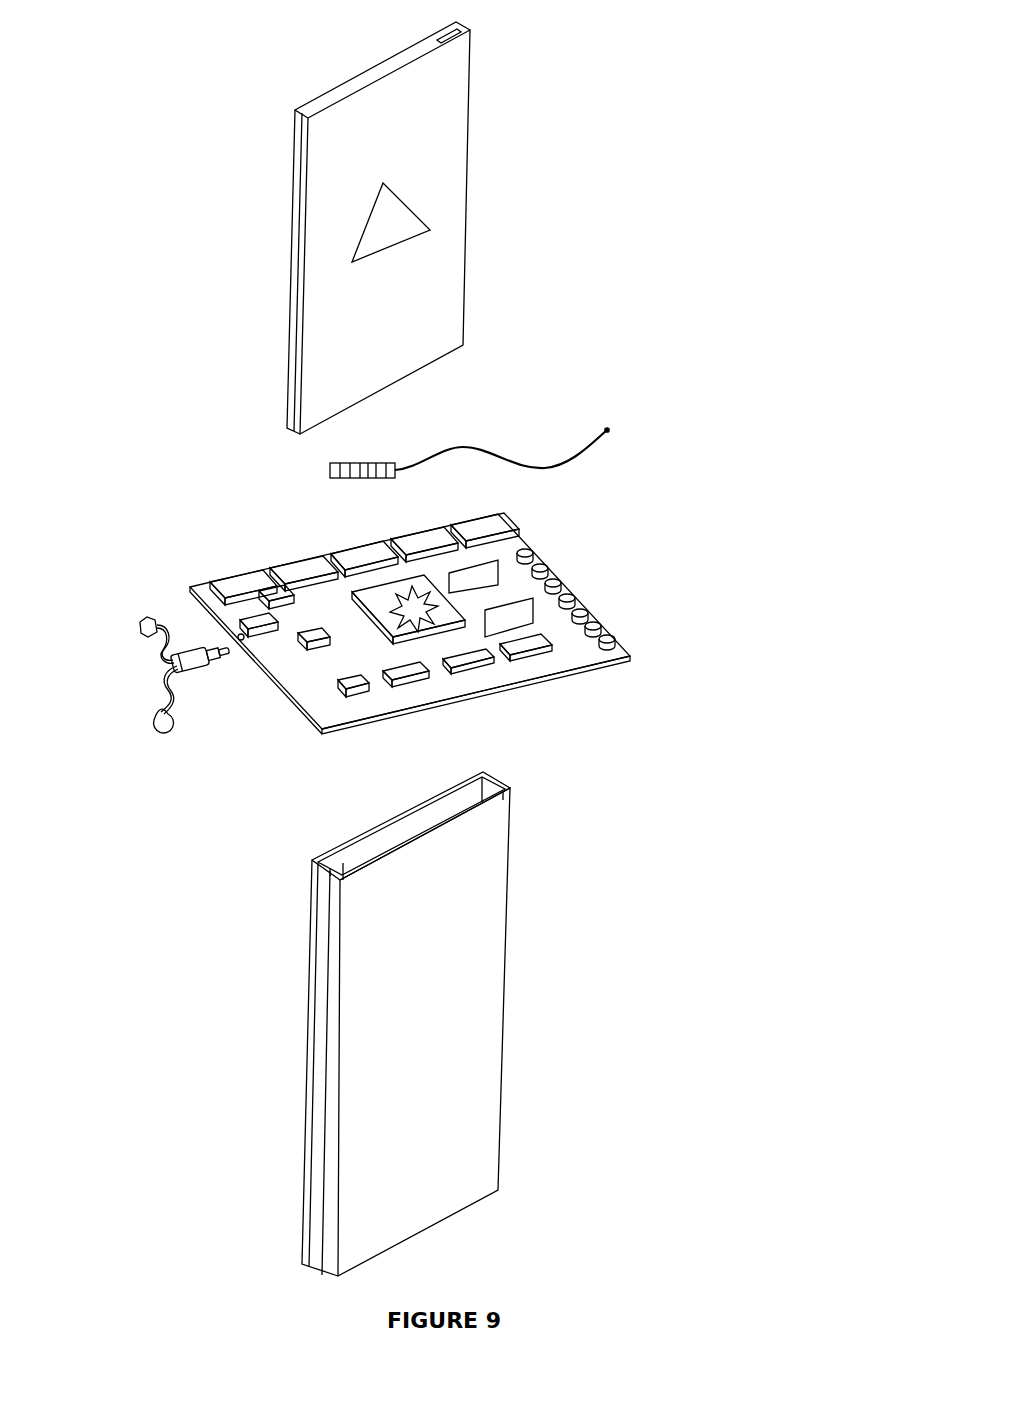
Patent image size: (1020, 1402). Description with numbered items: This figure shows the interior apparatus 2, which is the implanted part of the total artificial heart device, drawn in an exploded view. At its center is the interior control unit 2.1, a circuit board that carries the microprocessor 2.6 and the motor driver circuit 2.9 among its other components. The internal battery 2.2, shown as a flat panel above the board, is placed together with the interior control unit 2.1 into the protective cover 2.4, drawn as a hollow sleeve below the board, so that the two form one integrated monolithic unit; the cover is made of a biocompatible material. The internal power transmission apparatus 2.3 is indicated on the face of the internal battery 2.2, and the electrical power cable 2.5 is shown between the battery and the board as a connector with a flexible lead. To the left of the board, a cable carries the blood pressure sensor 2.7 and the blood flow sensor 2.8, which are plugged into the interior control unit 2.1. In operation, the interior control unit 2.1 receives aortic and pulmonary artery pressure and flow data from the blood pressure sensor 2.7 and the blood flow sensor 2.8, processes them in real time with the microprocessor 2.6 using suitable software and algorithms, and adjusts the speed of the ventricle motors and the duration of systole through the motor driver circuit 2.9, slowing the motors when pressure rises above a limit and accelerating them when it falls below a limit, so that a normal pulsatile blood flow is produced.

The interior apparatus 2 is at (627, 1257).
The interior control unit 2.1 is at (567, 587).
The internal battery 2.2 is at (453, 228).
The internal power transmission apparatus 2.3 is at (400, 218).
The protective cover 2.4 is at (490, 943).
The electrical power cable 2.5 is at (540, 468).
The microprocessor 2.6 is at (455, 625).
The blood pressure sensor 2.7 is at (137, 628).
The blood flow sensor 2.8 is at (150, 720).
The motor driver circuit 2.9 is at (517, 606).